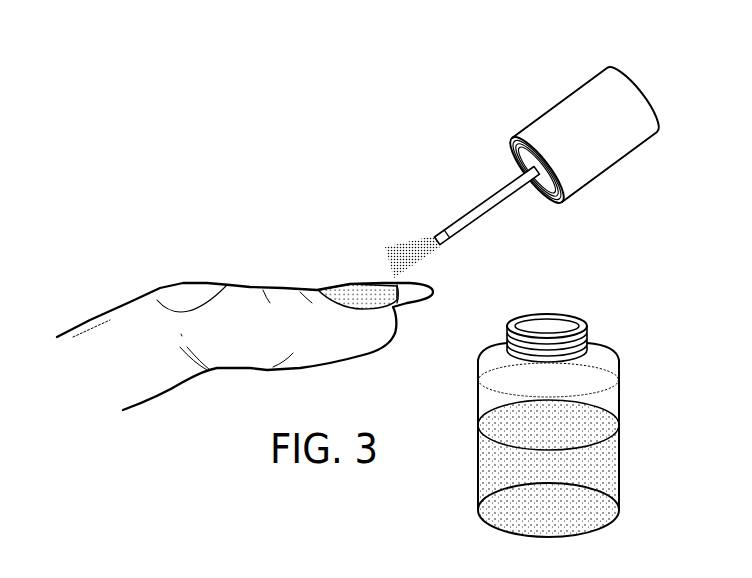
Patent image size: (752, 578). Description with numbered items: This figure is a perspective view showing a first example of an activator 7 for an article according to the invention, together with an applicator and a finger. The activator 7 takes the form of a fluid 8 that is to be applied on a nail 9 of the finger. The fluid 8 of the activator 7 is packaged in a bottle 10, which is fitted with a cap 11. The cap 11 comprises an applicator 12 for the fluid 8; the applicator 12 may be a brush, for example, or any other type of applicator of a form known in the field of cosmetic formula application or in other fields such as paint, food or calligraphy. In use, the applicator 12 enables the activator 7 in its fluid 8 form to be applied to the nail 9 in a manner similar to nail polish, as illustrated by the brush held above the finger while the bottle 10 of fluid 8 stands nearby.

The activator 7 is at (577, 394).
The fluid 8 is at (368, 293).
The nail 9 is at (245, 301).
The bottle 10 is at (620, 392).
The cap 11 is at (598, 103).
The applicator 12 is at (461, 210).